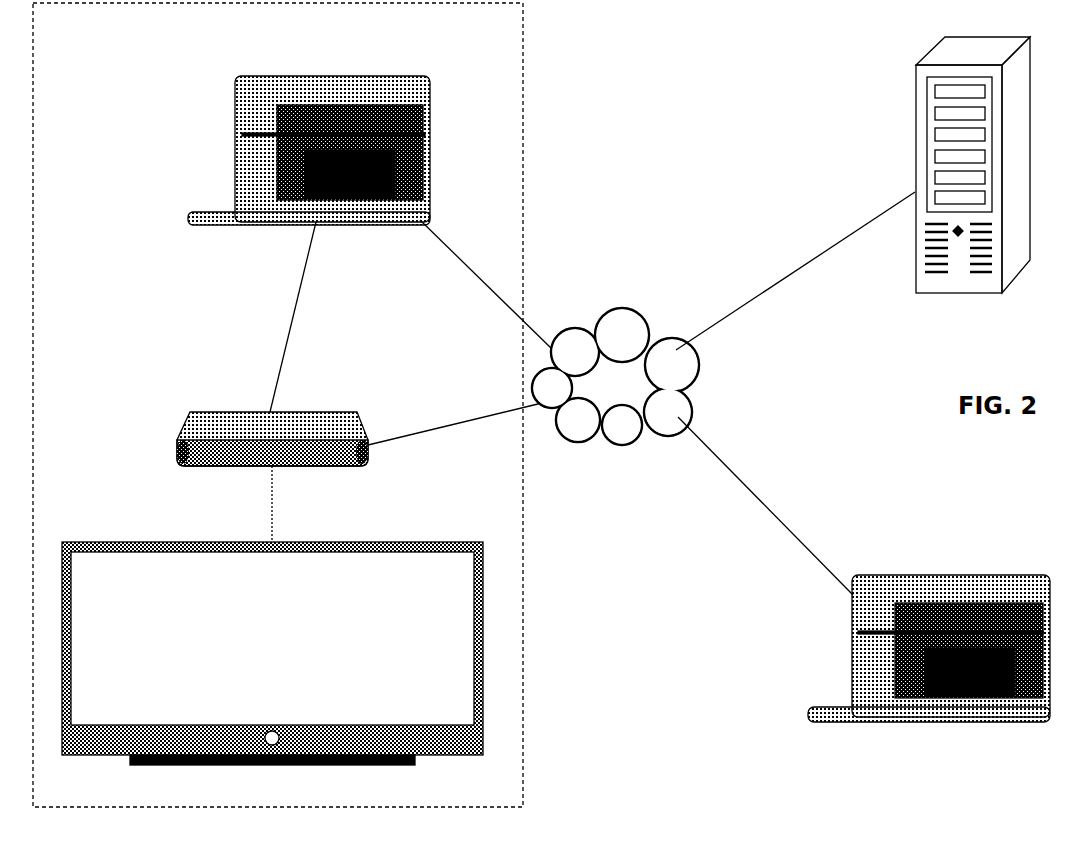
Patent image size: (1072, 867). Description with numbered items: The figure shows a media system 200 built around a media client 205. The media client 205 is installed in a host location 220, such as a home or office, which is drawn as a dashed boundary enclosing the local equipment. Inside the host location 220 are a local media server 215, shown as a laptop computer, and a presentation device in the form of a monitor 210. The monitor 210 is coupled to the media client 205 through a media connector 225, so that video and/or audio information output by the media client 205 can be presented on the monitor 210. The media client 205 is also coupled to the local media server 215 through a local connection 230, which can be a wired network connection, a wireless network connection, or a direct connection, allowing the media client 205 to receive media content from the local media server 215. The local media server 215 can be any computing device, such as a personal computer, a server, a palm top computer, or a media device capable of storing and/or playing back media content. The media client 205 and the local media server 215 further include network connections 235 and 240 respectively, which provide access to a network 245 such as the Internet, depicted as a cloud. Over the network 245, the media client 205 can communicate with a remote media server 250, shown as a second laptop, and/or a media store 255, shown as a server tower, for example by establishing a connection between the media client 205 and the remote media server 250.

The media system 200 is at (641, 133).
The media client 205 is at (183, 425).
The monitor 210 is at (366, 542).
The local media server 215 is at (233, 98).
The host location 220 is at (524, 240).
The media connector 225 is at (273, 520).
The local connection 230 is at (293, 318).
The network connection 235 is at (458, 421).
The network connection 240 is at (440, 242).
The network 245 is at (612, 325).
The remote media server 250 is at (806, 715).
The media store 255 is at (913, 82).